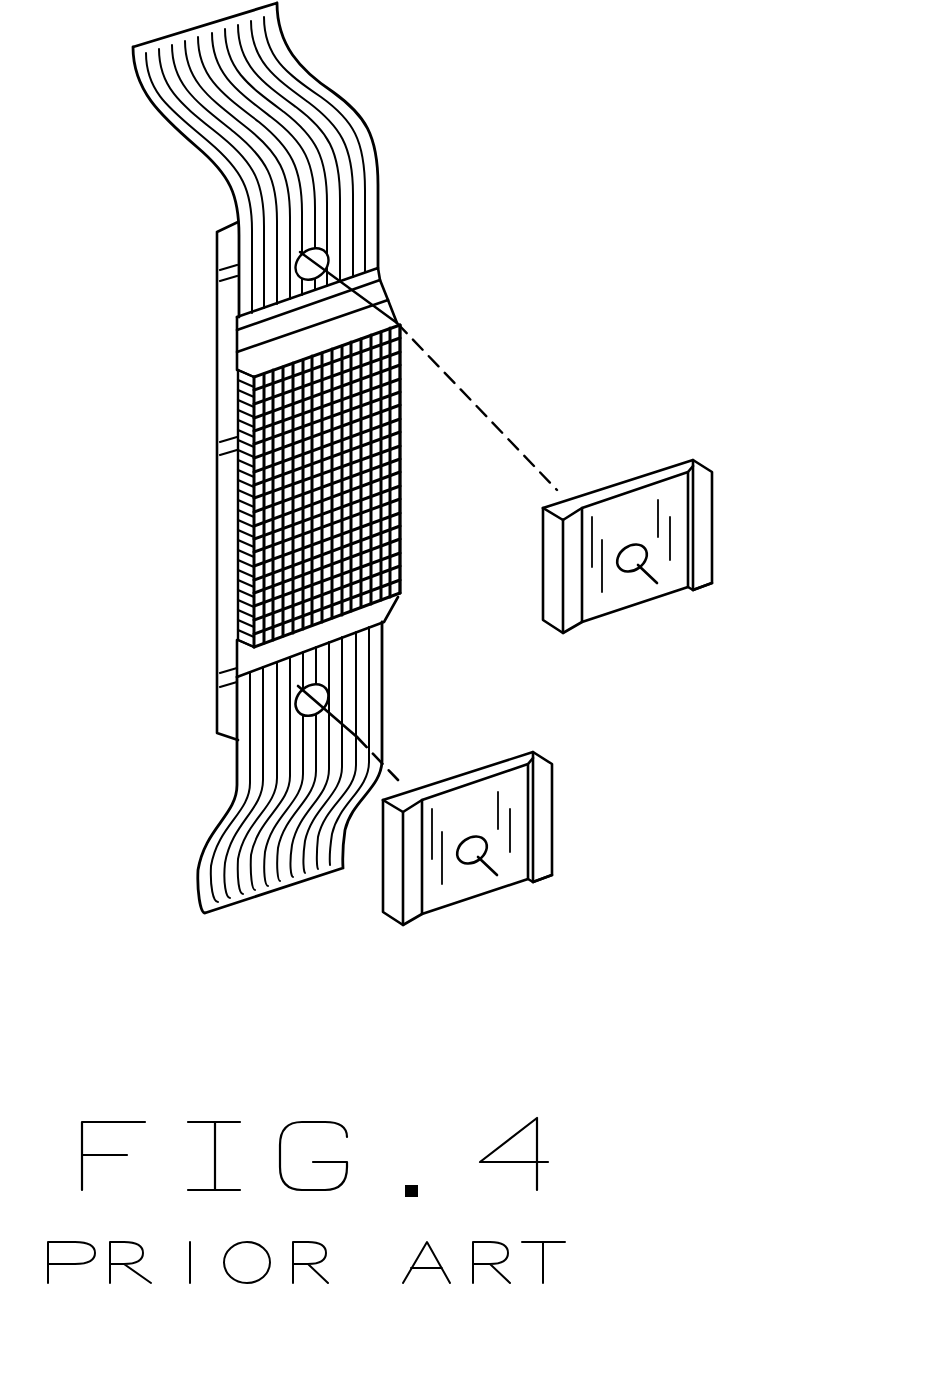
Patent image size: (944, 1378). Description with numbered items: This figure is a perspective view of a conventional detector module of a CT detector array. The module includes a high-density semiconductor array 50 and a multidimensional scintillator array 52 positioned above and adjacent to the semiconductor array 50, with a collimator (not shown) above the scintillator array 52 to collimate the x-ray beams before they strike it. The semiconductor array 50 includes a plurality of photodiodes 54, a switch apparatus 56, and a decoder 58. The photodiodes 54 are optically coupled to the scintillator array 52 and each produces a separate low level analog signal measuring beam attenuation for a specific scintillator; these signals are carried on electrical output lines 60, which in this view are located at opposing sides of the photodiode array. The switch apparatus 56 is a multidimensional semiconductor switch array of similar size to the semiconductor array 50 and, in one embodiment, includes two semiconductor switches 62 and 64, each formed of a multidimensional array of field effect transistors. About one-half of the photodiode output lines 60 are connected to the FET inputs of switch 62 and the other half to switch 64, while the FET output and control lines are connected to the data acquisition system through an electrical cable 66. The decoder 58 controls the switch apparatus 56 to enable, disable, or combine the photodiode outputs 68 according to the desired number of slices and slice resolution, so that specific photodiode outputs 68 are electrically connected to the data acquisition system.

The semiconductor array 50 is at (400, 503).
The scintillator array 52 is at (400, 473).
The photodiodes 54 is at (237, 480).
The switch apparatus 56 is at (385, 316).
The decoder 58 is at (386, 320).
The photodiode output lines 60 is at (240, 365).
The semiconductor switch 62 is at (353, 282).
The semiconductor switch 64 is at (293, 637).
The electrical cable 66 is at (350, 103).
The photodiode outputs 68 is at (232, 398).